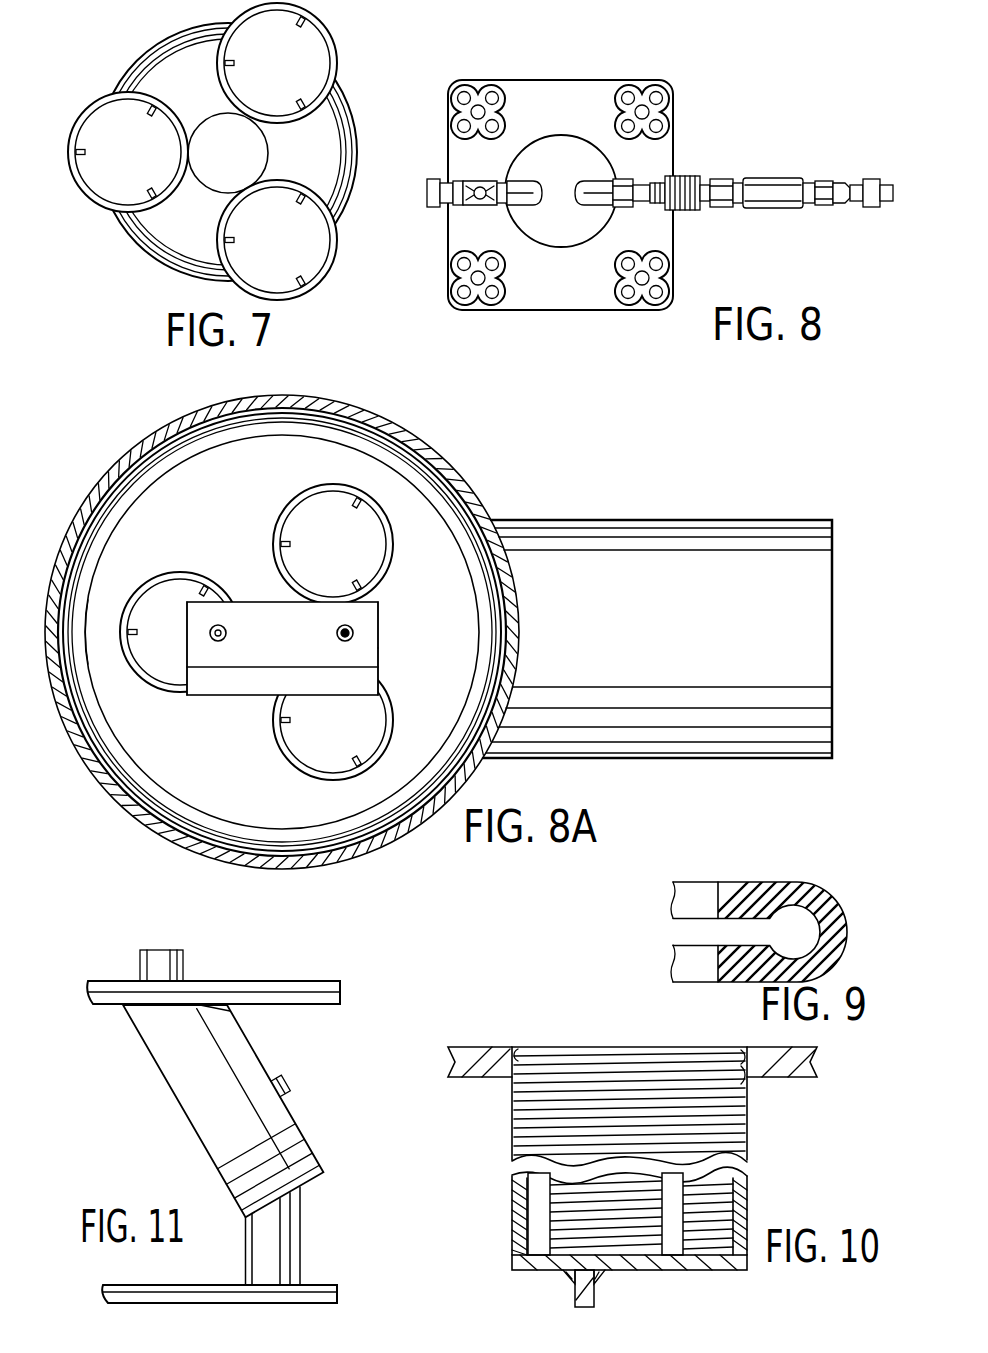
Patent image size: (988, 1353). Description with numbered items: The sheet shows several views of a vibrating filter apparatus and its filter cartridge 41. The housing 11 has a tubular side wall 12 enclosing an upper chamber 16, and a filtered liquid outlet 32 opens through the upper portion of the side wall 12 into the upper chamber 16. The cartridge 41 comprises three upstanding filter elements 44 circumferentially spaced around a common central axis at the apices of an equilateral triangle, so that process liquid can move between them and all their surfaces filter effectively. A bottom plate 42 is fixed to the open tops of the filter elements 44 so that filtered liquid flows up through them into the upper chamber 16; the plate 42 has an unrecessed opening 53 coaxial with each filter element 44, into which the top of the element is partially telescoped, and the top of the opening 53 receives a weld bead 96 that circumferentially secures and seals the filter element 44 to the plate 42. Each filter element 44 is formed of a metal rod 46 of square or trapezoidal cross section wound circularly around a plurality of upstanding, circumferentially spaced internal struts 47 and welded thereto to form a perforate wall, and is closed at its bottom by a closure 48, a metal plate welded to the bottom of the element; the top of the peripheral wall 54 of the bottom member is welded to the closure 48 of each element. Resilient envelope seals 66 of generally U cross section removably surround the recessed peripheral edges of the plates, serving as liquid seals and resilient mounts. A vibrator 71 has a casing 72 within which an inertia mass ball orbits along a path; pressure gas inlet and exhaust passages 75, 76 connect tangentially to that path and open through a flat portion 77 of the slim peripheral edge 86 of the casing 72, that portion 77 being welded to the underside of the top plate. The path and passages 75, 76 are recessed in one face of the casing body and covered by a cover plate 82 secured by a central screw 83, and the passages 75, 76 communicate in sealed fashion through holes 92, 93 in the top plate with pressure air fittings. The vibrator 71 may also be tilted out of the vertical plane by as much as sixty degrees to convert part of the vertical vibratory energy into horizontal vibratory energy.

In FIG. 8A, the housing 11 is at (128, 433).
In FIG. 8A, the side wall 12 is at (68, 530).
In FIG. 8A, the upper chamber 16 is at (113, 477).
In FIG. 8A, the filtered liquid outlet 32 is at (700, 525).
In FIG. 8A, the filter cartridge 41 is at (152, 602).
In FIG. 8A, the bottom plate 42 is at (255, 754).
In FIG. 10, the bottom plate 42 is at (495, 1053).
In FIG. 8A, the filter element 44 is at (145, 588).
In FIG. 10, the filter element 44 is at (511, 1108).
In FIG. 10, the metal rod 46 is at (515, 1210).
In FIG. 10, the internal strut 47 is at (684, 1196).
In FIG. 10, the bottom closure 48 is at (693, 1272).
In FIG. 10, the opening 53 is at (743, 1078).
In FIG. 10, the peripheral wall 54 is at (589, 1293).
In FIG. 8A, the envelope seal 66 is at (85, 653).
In FIG. 9, the envelope seal 66 is at (745, 890).
In FIG. 8A, the vibrator 71 is at (382, 625).
In FIG. 8A, the vibrator casing 72 is at (381, 648).
In FIG. 8A, the inlet passage 75 is at (224, 637).
In FIG. 8A, the exhaust passage 76 is at (338, 637).
In FIG. 8A, the peripheral portion 77 is at (260, 615).
In FIG. 8A, the cover plate 82 is at (245, 685).
In FIG. 8A, the central screw 83 is at (292, 703).
In FIG. 8A, the peripheral edge 86 is at (185, 658).
In FIG. 8A, the hole 92 is at (212, 636).
In FIG. 8A, the hole 93 is at (358, 630).
In FIG. 10, the weld bead 96 is at (738, 1053).